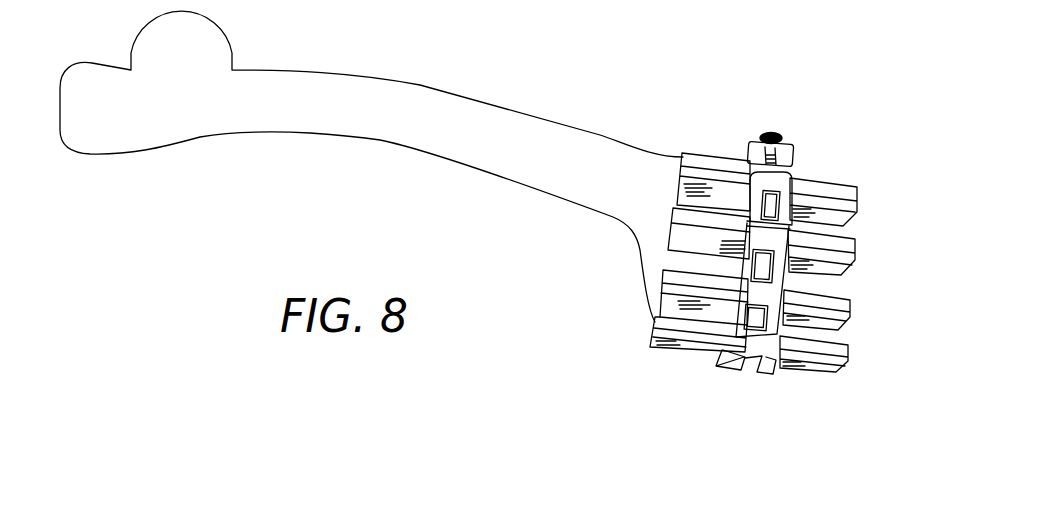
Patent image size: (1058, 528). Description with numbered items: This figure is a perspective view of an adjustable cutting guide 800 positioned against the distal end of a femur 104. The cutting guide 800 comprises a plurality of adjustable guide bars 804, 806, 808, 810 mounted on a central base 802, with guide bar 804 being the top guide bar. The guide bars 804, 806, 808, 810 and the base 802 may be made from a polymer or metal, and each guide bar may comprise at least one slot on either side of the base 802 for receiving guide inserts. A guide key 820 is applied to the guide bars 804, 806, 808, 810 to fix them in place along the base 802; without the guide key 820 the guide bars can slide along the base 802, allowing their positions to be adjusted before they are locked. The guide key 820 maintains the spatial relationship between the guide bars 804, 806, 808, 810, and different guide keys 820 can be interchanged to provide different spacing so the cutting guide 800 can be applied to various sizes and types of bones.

The cutting guide 800 is at (754, 230).
The femur 104 is at (647, 235).
The base 802 is at (793, 157).
The guide bar 804 is at (857, 200).
The guide bar 806 is at (857, 255).
The guide bar 808 is at (850, 310).
The guide bar 810 is at (848, 353).
The guide key 820 is at (770, 334).